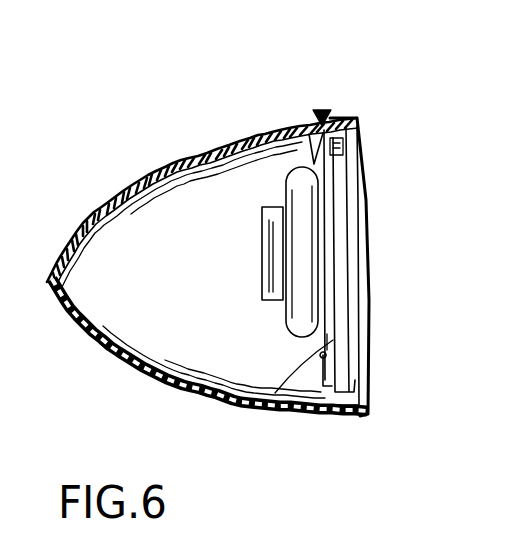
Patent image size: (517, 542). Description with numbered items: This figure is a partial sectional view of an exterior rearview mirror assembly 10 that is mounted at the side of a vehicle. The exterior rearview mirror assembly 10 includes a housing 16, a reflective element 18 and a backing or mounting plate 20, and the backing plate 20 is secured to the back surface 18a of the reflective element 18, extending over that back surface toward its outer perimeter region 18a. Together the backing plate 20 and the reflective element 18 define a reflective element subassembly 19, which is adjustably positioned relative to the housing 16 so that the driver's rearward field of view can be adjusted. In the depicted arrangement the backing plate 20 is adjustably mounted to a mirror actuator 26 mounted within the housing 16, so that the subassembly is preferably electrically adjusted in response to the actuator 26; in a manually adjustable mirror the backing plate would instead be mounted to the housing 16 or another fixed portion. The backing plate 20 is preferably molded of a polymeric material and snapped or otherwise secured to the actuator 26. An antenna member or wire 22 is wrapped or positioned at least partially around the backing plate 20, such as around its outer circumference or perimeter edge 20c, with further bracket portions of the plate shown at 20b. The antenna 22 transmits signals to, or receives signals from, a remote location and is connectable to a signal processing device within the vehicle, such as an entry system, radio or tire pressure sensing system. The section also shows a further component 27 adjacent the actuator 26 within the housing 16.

The exterior rearview mirror assembly 10 is at (153, 79).
The housing 16 is at (183, 162).
The reflective element 18 is at (340, 267).
The back surface of reflective element 18a is at (330, 341).
The reflective element subassembly 19 is at (323, 110).
The backing plate 20 is at (330, 227).
The bracket lower arm 20b is at (263, 400).
The outer circumference of backing plate 20c is at (329, 412).
The antenna wire 22 is at (293, 128).
The mirror actuator 26 is at (307, 190).
The battery holder 27 is at (265, 300).